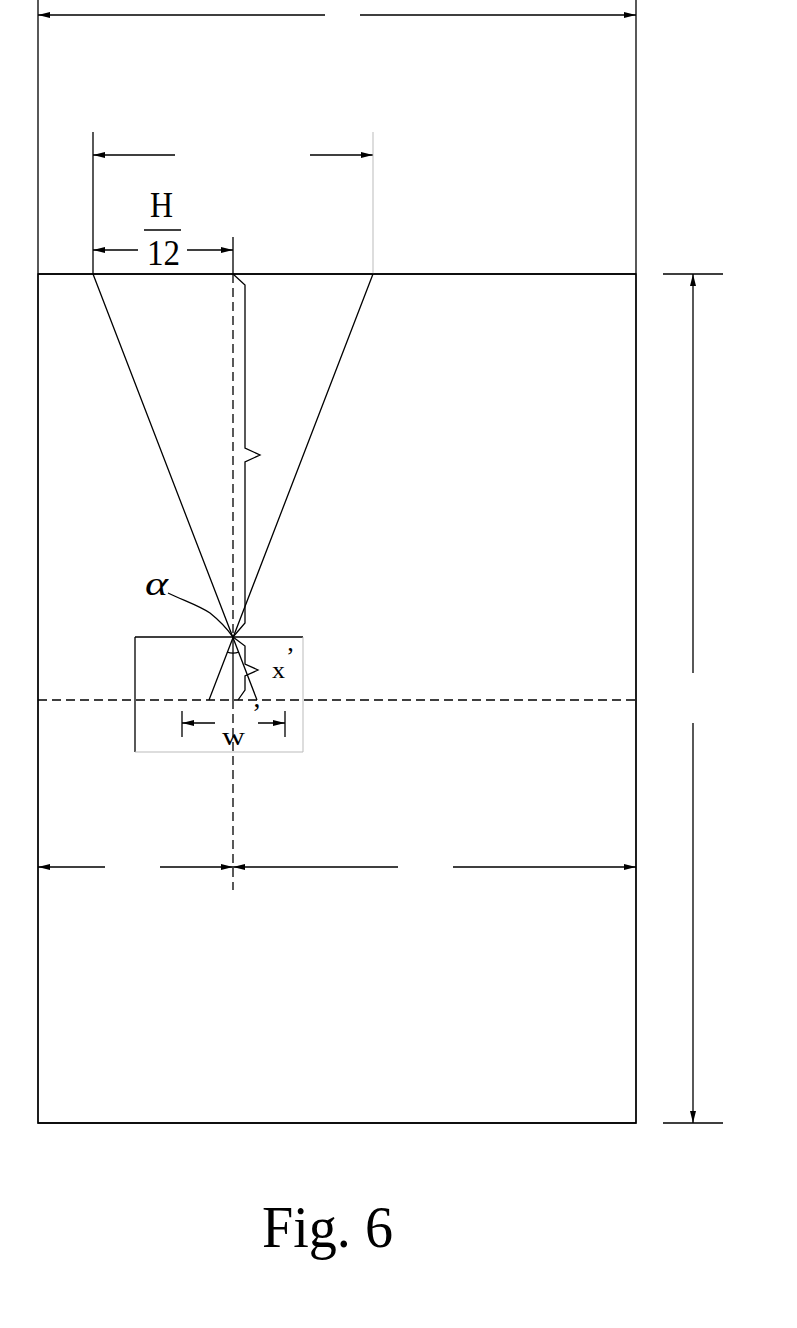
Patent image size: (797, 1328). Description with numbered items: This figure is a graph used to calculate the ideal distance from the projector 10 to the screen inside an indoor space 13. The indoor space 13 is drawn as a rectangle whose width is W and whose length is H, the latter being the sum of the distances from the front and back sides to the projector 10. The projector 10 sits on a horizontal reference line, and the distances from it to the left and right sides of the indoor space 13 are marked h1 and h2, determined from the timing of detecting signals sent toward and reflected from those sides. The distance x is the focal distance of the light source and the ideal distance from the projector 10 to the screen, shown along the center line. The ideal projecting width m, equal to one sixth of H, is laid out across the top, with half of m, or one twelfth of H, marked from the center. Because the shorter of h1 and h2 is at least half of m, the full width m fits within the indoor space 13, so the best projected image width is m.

The indoor space 13 is at (447, 274).
The projector 10 is at (305, 657).
The width of the indoor space W is at (337, 14).
The length of the indoor space H is at (693, 698).
The distance from the projector to the left side h1 is at (135, 866).
The distance from the projector to the right side h2 is at (434, 866).
The ideal distance from the projector to the screen x is at (256, 455).
The ideal projecting width m is at (288, 150).